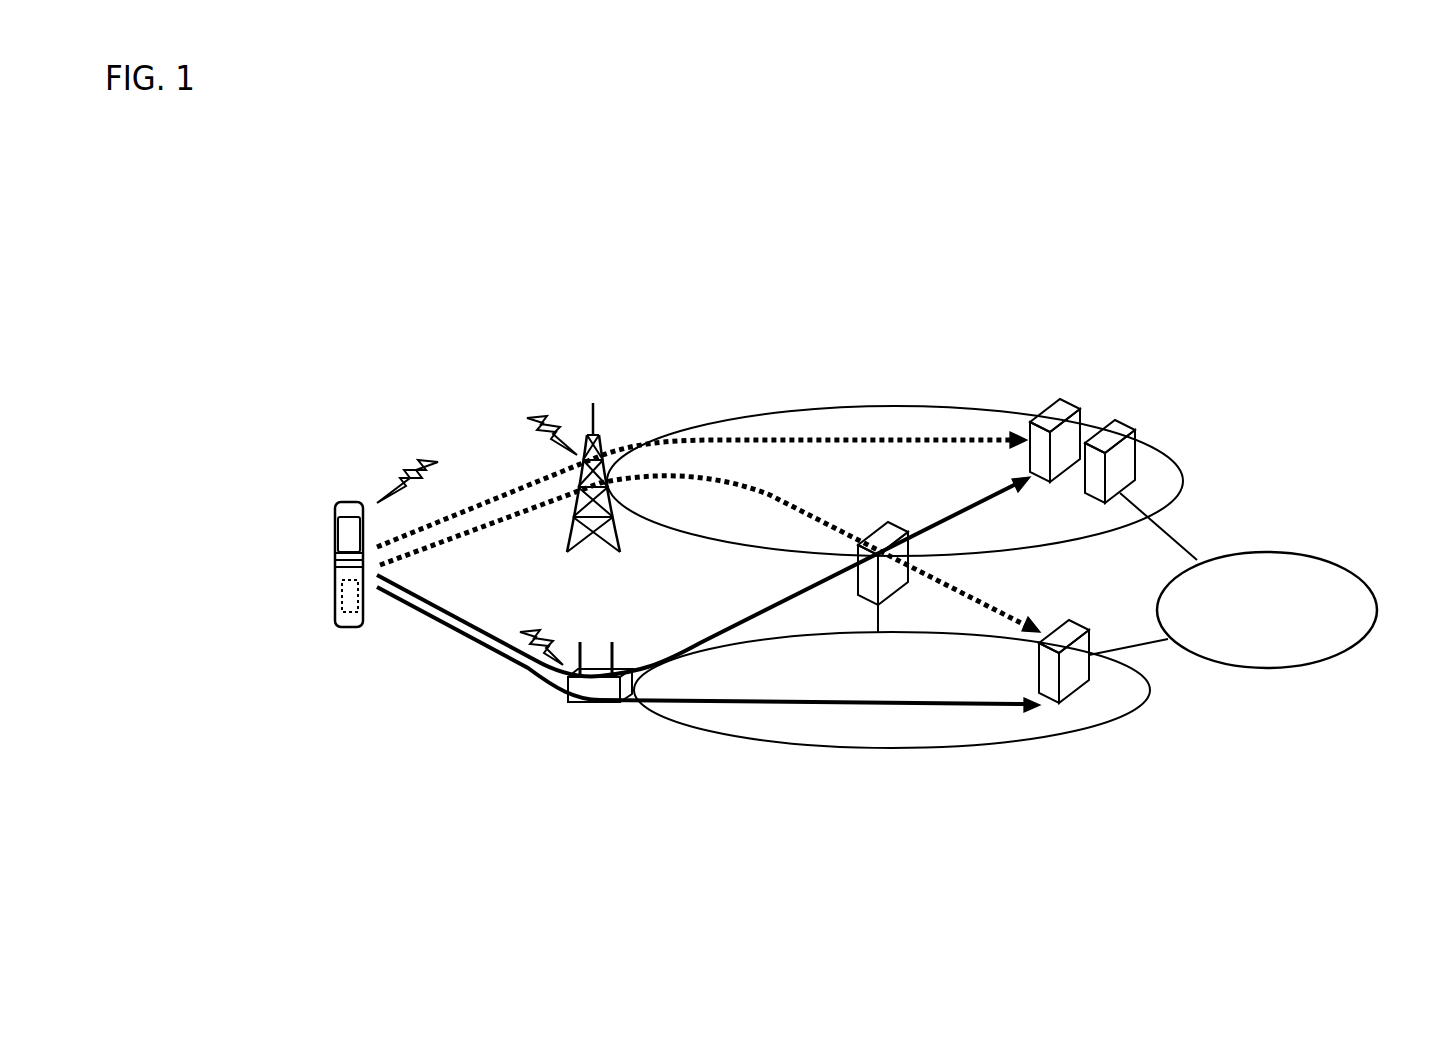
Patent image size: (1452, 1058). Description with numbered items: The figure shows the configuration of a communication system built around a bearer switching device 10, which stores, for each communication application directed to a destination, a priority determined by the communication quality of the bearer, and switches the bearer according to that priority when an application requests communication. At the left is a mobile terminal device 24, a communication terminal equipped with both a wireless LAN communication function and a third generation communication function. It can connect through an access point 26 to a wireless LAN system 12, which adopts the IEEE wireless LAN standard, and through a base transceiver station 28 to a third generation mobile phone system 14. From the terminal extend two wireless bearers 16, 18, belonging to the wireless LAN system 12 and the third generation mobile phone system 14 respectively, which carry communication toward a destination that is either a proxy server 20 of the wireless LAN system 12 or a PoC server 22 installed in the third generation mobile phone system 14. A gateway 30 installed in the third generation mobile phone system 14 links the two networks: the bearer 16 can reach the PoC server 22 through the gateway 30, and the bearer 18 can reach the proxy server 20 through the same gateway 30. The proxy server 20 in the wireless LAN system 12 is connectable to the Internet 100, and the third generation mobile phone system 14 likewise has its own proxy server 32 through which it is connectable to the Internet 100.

The bearer switching device 10 is at (337, 597).
The wireless LAN system 12 is at (882, 748).
The third generation mobile phone system 14 is at (776, 410).
The wireless bearer 16 is at (410, 615).
The wireless bearer 18 is at (473, 507).
The proxy server 20 is at (1077, 665).
The PoC server 22 is at (1055, 402).
The mobile terminal device 24 is at (340, 502).
The access point 26 is at (576, 704).
The base transceiver station 28 is at (598, 442).
The gateway 30 is at (908, 548).
The proxy server 32 is at (1113, 432).
The Internet 100 is at (1341, 566).